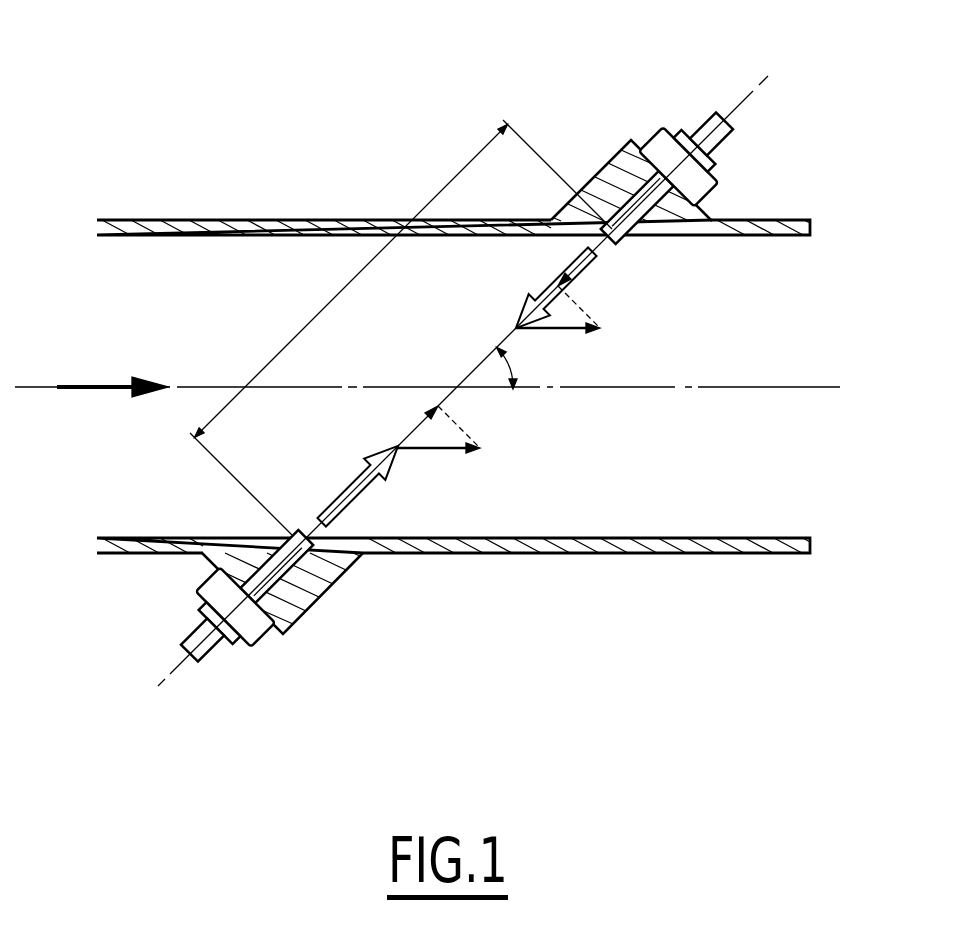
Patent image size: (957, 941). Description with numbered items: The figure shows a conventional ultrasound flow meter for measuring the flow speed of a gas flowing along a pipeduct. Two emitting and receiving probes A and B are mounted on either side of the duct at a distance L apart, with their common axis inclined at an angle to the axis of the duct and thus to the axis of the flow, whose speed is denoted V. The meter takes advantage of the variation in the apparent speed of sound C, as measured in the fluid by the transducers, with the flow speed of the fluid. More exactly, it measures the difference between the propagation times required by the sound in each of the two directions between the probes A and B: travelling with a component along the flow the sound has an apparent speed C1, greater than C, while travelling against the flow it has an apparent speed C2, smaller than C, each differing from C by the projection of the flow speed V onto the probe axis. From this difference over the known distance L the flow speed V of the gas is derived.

The emitting and receiving probe A is at (257, 630).
The emitting and receiving probe B is at (656, 146).
The distance between probes L is at (401, 327).
The flow speed of the gas V is at (328, 404).
The propagation speed of sound in the gas C is at (457, 387).
The downstream propagation speed C+V cos θ C1 is at (377, 425).
The upstream propagation speed C−V cos θ C2 is at (654, 300).